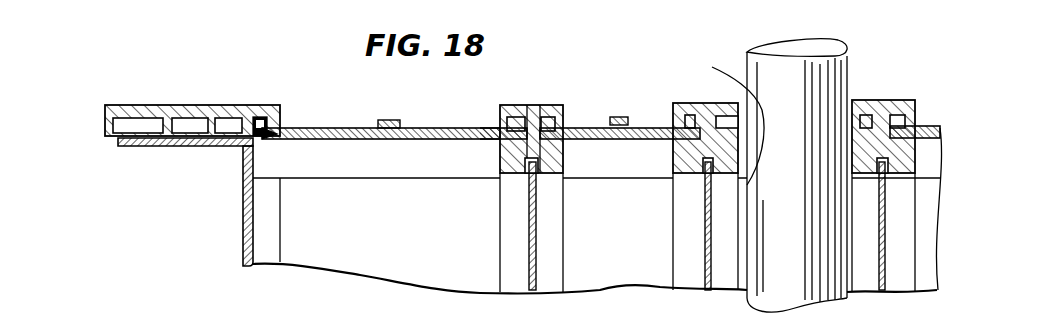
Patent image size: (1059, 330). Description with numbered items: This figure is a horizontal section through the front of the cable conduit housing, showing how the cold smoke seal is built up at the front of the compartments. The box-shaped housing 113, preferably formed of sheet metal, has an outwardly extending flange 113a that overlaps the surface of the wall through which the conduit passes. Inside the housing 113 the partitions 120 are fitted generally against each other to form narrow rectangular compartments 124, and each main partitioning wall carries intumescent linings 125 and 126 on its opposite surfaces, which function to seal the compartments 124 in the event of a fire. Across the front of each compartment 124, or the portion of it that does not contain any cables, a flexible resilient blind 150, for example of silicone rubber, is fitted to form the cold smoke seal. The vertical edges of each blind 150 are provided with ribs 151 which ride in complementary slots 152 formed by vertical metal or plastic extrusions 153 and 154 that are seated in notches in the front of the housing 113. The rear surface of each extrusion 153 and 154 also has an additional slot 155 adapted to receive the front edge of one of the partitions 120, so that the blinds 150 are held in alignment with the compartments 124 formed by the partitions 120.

The extrusion 154 is at (187, 105).
The rib 151 is at (263, 117).
The slot 152 is at (277, 130).
The blind 150 is at (330, 127).
The additional slot 155 is at (446, 158).
The extrusion 153 is at (557, 103).
The compartment 124 is at (398, 233).
The flange 113a is at (158, 147).
The housing 113 is at (243, 203).
The partition 120 is at (705, 244).
The lining 126 is at (500, 292).
The lining 125 is at (593, 288).